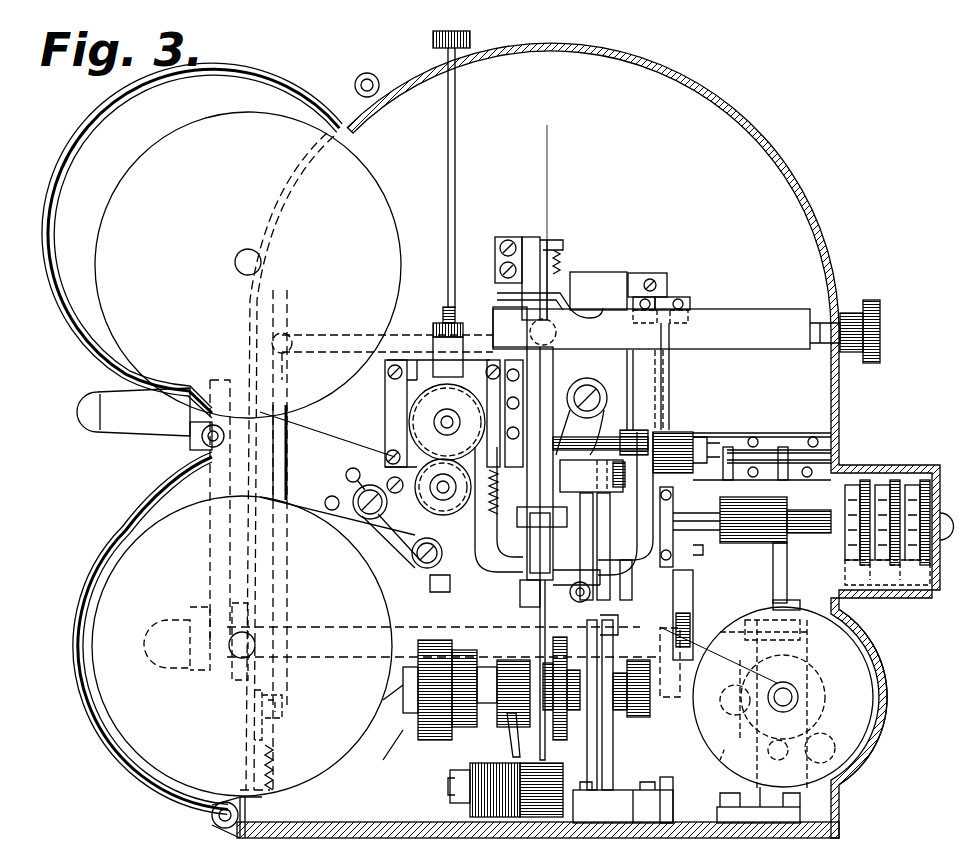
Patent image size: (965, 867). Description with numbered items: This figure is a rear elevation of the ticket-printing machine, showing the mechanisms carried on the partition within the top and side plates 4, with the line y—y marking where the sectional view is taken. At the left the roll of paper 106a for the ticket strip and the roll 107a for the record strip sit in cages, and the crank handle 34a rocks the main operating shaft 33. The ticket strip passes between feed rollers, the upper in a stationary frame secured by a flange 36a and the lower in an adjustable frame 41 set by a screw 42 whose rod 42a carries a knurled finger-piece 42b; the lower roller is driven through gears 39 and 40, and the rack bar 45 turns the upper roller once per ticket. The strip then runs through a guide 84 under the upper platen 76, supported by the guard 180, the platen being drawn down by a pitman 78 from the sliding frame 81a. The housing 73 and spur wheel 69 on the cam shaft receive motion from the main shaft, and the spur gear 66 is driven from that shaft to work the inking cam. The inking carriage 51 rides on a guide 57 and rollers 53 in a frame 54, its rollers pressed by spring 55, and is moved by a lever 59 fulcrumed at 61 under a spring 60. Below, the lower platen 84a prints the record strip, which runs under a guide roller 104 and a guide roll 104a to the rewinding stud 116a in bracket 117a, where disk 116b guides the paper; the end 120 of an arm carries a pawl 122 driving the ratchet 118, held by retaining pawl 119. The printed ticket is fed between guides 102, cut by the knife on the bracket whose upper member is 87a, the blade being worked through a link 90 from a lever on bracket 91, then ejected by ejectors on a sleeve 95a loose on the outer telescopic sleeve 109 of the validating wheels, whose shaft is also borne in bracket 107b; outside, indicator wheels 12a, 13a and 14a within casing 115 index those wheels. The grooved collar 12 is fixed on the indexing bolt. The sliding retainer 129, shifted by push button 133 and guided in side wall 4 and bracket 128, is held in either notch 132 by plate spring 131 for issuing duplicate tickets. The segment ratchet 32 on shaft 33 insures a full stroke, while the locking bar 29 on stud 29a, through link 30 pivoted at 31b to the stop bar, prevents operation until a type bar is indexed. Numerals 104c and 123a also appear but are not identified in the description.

The side plate 4 is at (270, 232).
The crank handle 34a is at (132, 434).
The roll of paper 106a is at (358, 178).
The roll 107a is at (385, 593).
The link 30 is at (288, 470).
The main operating shaft 33 is at (347, 645).
The pivot 31b is at (282, 703).
The segment ratchet 32 is at (270, 730).
The knurled finger-piece 42b is at (430, 40).
The rod 42a is at (456, 186).
The screw 42 is at (460, 312).
The stud 29a is at (461, 330).
The adjustable frame 41 is at (448, 357).
The locking bar 29 is at (395, 348).
The flange 36a is at (380, 392).
The gear 39 is at (420, 405).
The gear 40 is at (395, 478).
The roller 53 is at (493, 438).
The rack bar 45 is at (382, 578).
The roller frame 54 is at (440, 556).
The bracket 128 is at (532, 242).
The section line y is at (563, 439).
The plate spring 131 is at (583, 300).
The notch 132 is at (568, 322).
The sliding retainer 129 is at (717, 330).
The push button 133 is at (878, 325).
The upper platen 76 is at (581, 405).
The upper member of bracket 87a is at (668, 376).
The guard 180 is at (557, 457).
The inking roller carriage 51 is at (591, 476).
The spring 55 is at (620, 475).
The guide 84 is at (499, 509).
The guide 57 is at (542, 531).
The pitman 78 is at (590, 574).
The guide roller 104 is at (618, 546).
The guide roll 104a is at (438, 585).
The lower platen 84a is at (540, 610).
The lever 59 is at (546, 612).
The spur gear 66 is at (555, 650).
The sliding frame 81a is at (605, 655).
The housing 73 is at (420, 730).
The spur wheel 69 is at (450, 735).
The spring 60 is at (483, 768).
The fulcrum 61 is at (455, 800).
The guide 102 is at (805, 442).
The bracket 107b is at (692, 548).
The sleeve 109 is at (810, 555).
The link 90 is at (680, 590).
The sleeve 95a is at (729, 573).
The bracket 91 is at (690, 640).
The bracket 104c is at (616, 600).
The grooved collar 12 is at (670, 700).
The ratchet wheel 118 is at (810, 668).
The rewinding stud 116a is at (802, 697).
The disk 116b is at (876, 640).
The retaining pawl 119 is at (818, 740).
The pawl 122 is at (745, 718).
The end of arm 120 is at (680, 720).
The pawl 123a is at (732, 762).
The bracket 117a is at (760, 792).
The indicator wheel 14a is at (855, 488).
The indicator wheel 13a is at (884, 488).
The indicator wheel 12a is at (912, 488).
The casing 115 is at (915, 592).